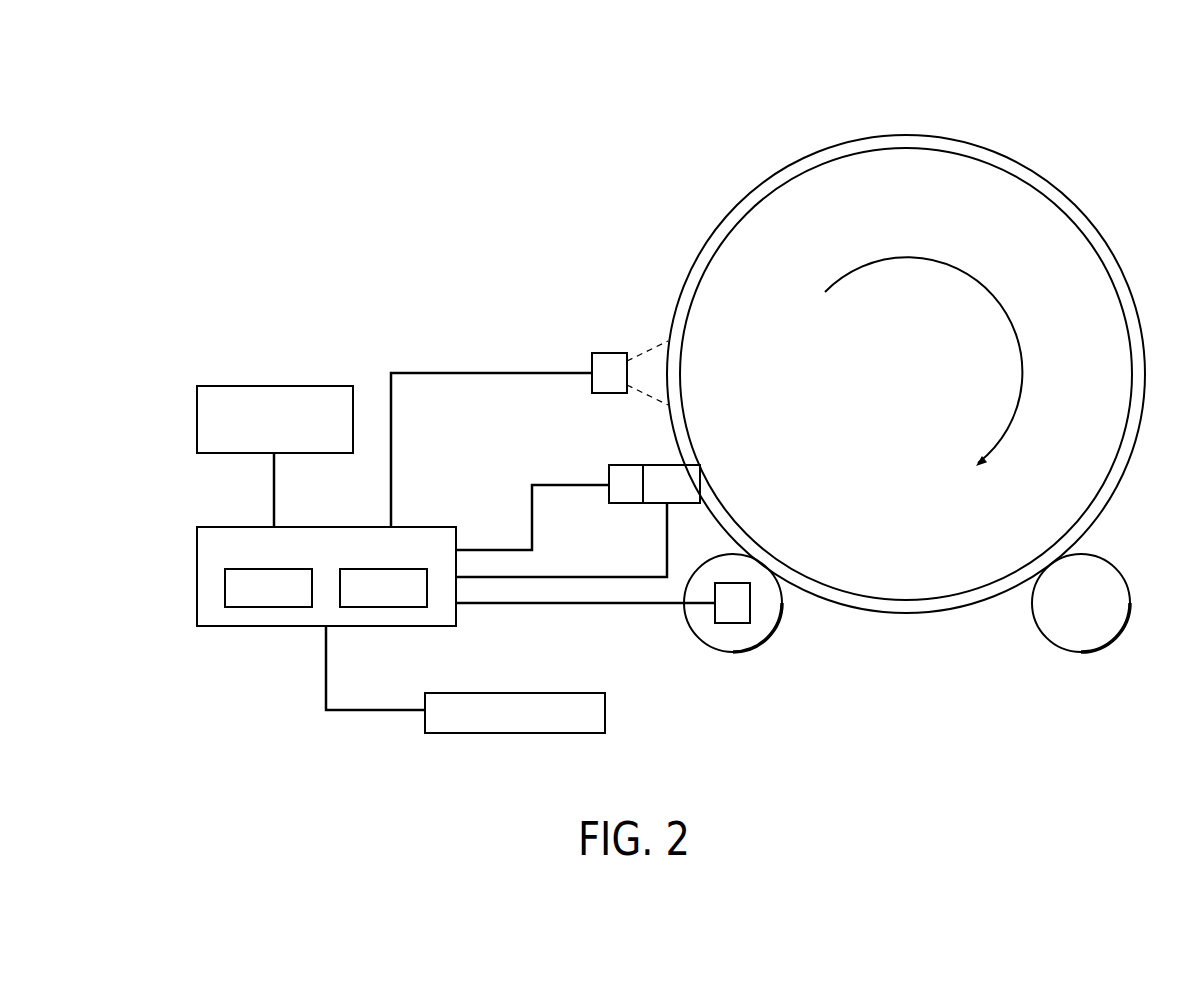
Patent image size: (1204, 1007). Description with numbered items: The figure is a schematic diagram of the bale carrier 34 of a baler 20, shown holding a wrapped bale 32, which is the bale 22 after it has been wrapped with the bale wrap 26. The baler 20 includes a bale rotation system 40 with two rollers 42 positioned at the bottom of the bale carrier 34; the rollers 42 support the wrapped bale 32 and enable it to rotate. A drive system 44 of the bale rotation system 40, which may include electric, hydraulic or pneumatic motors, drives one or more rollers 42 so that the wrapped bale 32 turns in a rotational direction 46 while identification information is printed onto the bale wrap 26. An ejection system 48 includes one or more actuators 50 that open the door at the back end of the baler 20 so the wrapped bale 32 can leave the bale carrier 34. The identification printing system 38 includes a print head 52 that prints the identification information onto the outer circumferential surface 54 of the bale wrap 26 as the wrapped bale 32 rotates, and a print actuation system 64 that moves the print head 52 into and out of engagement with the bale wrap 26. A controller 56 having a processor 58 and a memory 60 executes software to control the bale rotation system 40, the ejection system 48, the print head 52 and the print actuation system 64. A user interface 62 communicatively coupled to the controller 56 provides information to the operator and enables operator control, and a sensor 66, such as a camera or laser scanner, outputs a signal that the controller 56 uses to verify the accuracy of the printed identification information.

The baler 20 is at (1083, 153).
The bale 22 is at (921, 391).
The bale wrap 26 is at (1127, 283).
The wrapped bale 32 is at (988, 72).
The bale carrier 34 is at (778, 121).
The identification printing system 38 is at (495, 340).
The bale rotation system 40 is at (814, 634).
The rollers 42 is at (768, 640).
The drive system 44 is at (732, 623).
The rotational direction 46 is at (1022, 373).
The ejection system 48 is at (526, 754).
The actuators 50 is at (605, 713).
The print head 52 is at (655, 465).
The outer circumferential surface 54 is at (662, 268).
The controller 56 is at (197, 578).
The processor 58 is at (385, 607).
The memory 60 is at (268, 607).
The user interface 62 is at (275, 386).
The print actuation system 64 is at (627, 503).
The sensor 66 is at (605, 353).